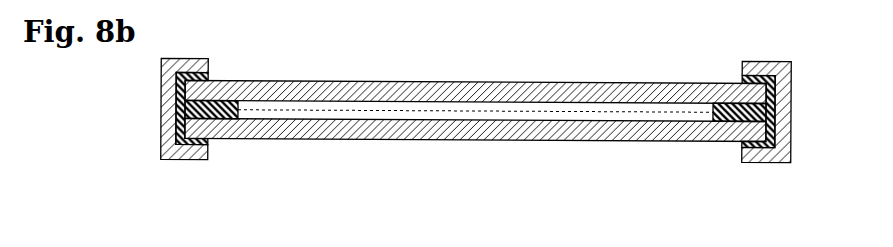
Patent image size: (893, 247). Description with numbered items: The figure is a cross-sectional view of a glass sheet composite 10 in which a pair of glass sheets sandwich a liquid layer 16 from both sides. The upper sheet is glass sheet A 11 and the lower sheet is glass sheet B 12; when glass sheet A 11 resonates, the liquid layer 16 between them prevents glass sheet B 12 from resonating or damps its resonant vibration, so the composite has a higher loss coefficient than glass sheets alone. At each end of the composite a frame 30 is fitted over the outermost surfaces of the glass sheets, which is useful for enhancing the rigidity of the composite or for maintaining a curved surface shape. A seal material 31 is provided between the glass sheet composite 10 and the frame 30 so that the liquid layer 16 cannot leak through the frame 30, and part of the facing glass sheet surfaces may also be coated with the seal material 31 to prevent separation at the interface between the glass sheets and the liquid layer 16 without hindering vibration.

The glass sheet composite 10 is at (505, 103).
The glass sheet A 11 is at (555, 82).
The glass sheet B 12 is at (538, 140).
The liquid layer 16 is at (433, 118).
The frame 30 is at (792, 102).
The seal material 31 is at (209, 143).